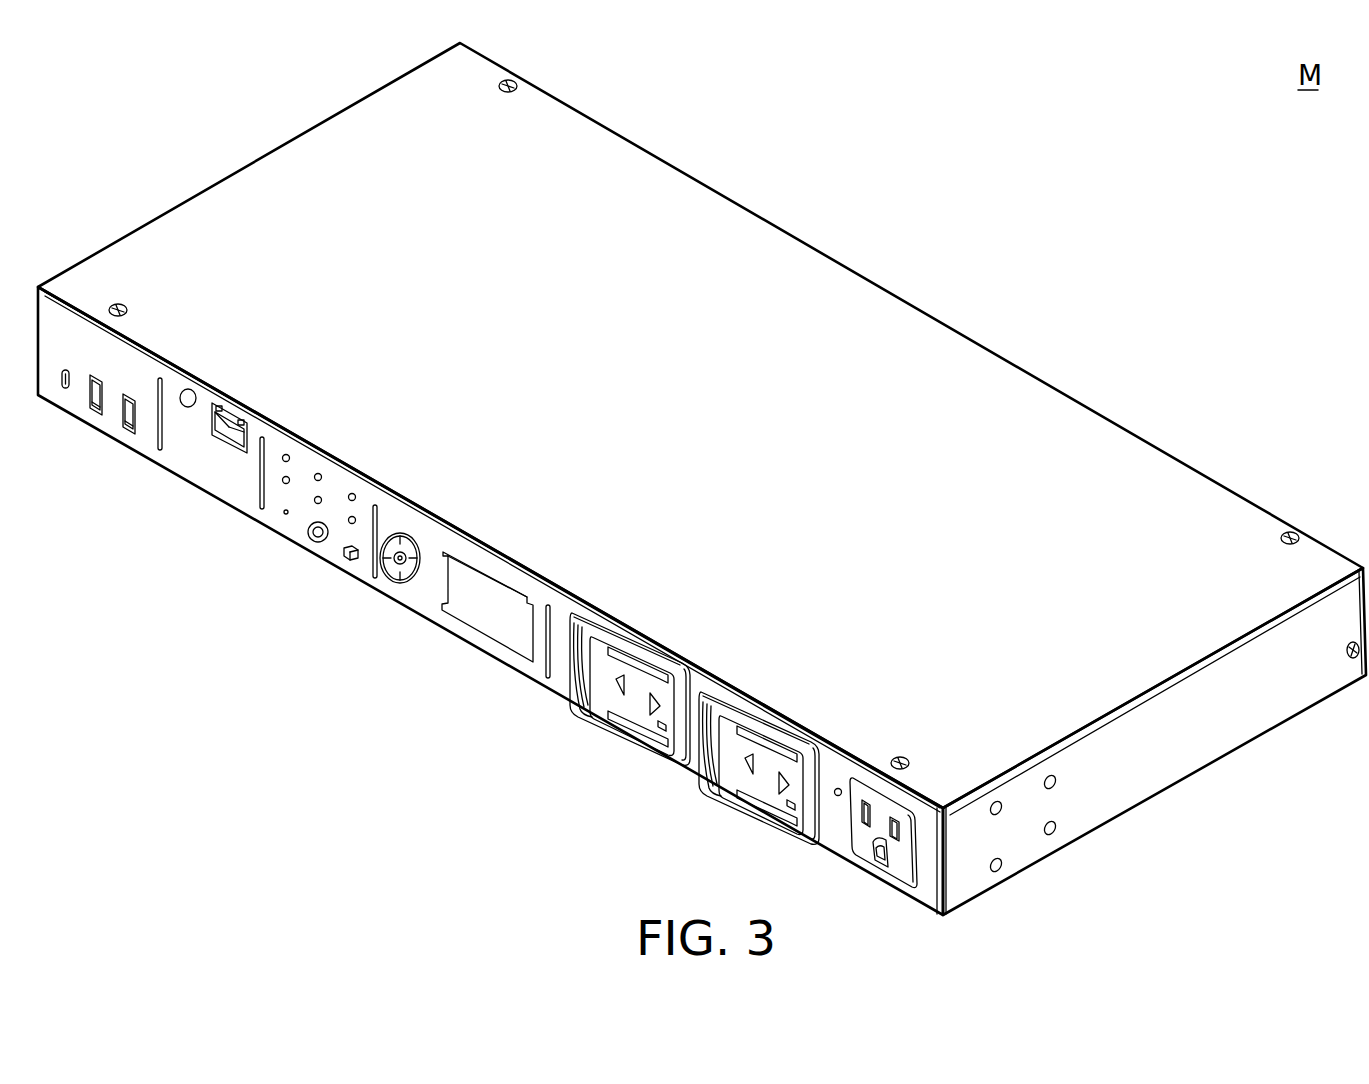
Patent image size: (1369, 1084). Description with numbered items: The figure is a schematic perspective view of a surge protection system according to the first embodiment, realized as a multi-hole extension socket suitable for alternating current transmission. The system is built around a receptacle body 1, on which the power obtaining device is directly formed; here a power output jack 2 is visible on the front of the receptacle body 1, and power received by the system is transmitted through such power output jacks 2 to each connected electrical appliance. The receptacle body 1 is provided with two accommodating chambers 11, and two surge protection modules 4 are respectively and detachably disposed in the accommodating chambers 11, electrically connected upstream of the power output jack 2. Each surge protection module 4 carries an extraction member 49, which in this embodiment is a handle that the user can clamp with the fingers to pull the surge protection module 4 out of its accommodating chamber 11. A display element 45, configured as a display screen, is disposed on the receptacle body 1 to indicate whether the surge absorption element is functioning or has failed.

The receptacle body 1 is at (911, 301).
The power output jack 2 is at (866, 855).
The surge protection module 4 is at (632, 742).
The accommodating chamber 11 is at (688, 695).
The display element 45 is at (485, 608).
The extraction member 49 is at (576, 680).